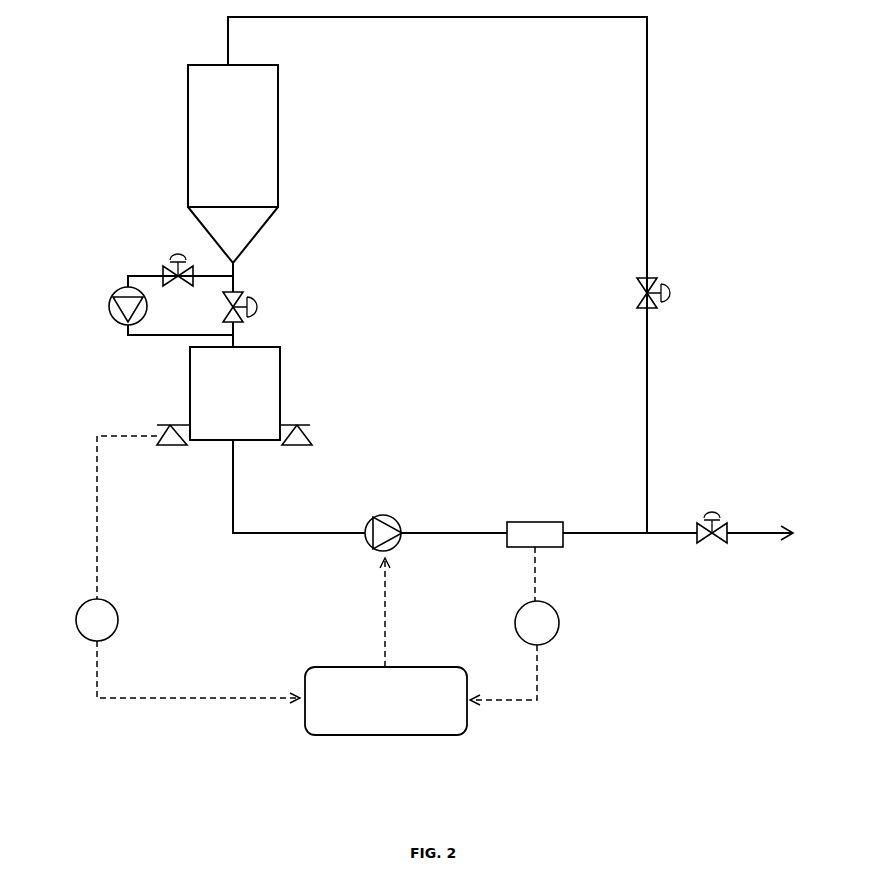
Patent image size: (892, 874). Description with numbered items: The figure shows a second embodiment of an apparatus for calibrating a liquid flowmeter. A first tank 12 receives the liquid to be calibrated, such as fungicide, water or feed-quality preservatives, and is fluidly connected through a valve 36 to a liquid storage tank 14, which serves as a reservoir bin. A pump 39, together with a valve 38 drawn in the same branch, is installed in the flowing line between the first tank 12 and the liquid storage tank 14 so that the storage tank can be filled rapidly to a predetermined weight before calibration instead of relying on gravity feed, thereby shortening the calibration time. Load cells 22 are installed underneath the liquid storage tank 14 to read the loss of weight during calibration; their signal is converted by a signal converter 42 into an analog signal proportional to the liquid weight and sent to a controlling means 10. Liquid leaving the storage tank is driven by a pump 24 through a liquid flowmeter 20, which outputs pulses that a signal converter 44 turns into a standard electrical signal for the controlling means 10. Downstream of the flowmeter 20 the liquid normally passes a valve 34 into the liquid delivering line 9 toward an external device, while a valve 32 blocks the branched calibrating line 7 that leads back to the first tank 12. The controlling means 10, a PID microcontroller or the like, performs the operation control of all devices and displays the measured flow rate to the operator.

The calibrating line 7 is at (648, 132).
The liquid delivering line 9 is at (758, 536).
The controlling means 10 is at (318, 666).
The first tank 12 is at (280, 151).
The liquid storage tank 14 is at (282, 398).
The liquid flowmeter 20 is at (526, 521).
The load cells 22 is at (315, 437).
The pump 24 is at (383, 515).
The valve 32 is at (634, 302).
The valve 34 is at (720, 521).
The valve 36 is at (257, 306).
The valve 38 is at (163, 264).
The pump 39 is at (112, 302).
The signal converter 42 is at (117, 627).
The signal converter 44 is at (559, 632).